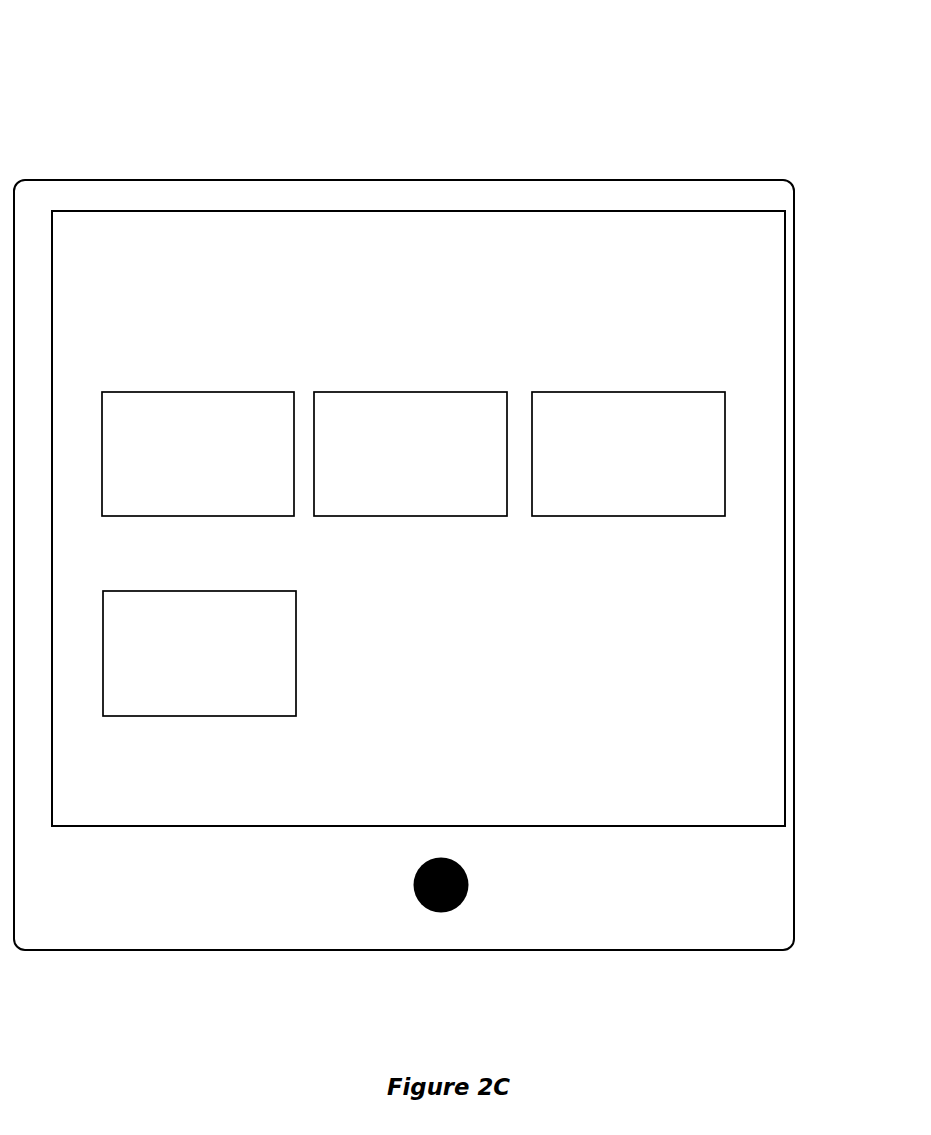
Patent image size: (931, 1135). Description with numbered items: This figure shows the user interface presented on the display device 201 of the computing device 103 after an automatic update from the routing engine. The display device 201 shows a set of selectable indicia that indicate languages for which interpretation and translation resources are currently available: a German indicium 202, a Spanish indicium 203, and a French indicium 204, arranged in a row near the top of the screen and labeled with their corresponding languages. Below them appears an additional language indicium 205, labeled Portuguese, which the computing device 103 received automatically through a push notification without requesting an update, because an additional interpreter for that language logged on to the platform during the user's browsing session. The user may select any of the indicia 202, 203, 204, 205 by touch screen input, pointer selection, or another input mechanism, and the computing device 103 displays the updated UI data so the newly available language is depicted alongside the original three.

The computing device 103 is at (388, 77).
The display device 201 is at (484, 211).
The German indicium 202 is at (148, 391).
The Spanish indicium 203 is at (360, 391).
The French indicium 204 is at (578, 391).
The additional language indicium 205 is at (149, 591).